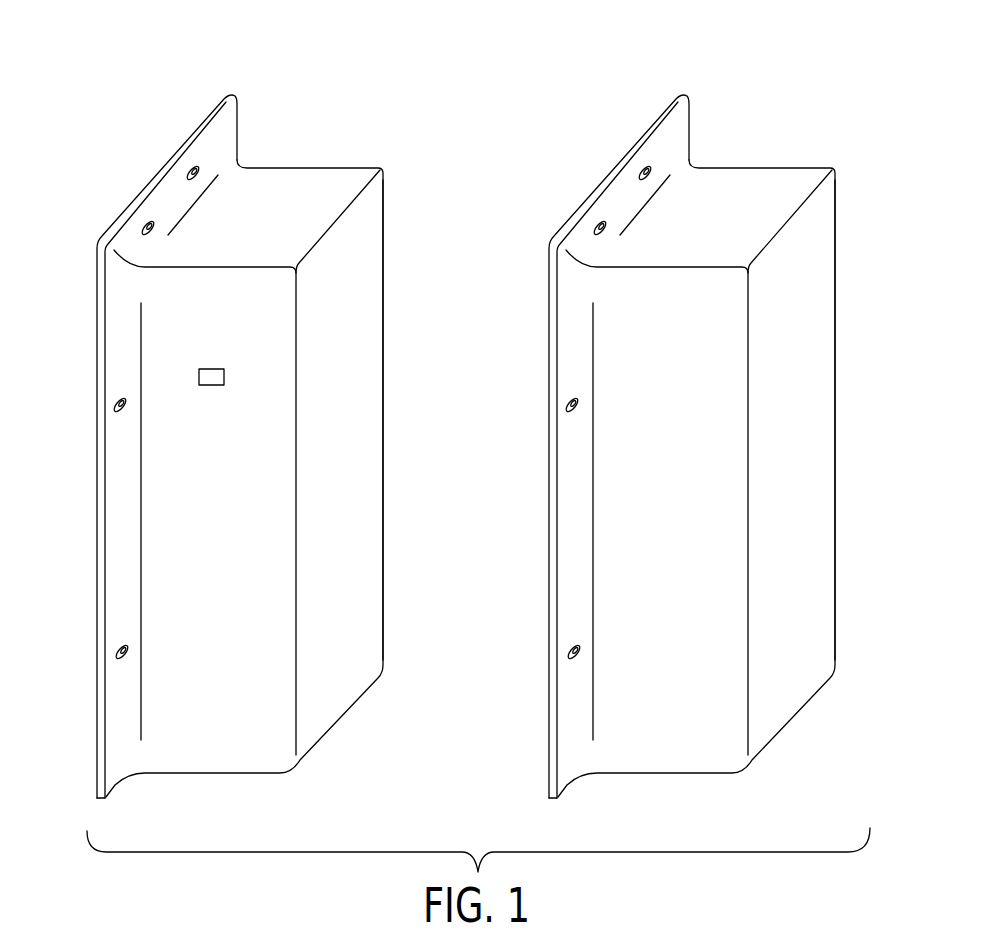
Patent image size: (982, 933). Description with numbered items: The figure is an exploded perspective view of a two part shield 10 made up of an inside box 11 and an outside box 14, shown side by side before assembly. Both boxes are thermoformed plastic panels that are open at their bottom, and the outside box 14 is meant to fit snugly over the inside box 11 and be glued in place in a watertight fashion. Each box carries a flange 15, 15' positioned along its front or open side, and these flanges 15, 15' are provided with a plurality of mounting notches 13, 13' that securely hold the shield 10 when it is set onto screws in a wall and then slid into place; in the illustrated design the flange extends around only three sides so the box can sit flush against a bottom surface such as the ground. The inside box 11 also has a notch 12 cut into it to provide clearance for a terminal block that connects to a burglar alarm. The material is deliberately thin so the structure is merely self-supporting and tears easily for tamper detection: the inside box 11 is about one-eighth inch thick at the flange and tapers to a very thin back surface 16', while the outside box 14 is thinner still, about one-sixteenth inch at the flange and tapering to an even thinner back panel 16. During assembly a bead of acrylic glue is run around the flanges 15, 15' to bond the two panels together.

The shield 10 is at (445, 796).
The inside box 11 is at (289, 183).
The notch 12 is at (211, 378).
The mounting notches 13 is at (608, 366).
The mounting notches 13' is at (156, 366).
The outside box 14 is at (696, 449).
The flange 15 is at (631, 407).
The flange 15' is at (180, 407).
The back panel 16 is at (850, 420).
The back surface 16' is at (402, 420).